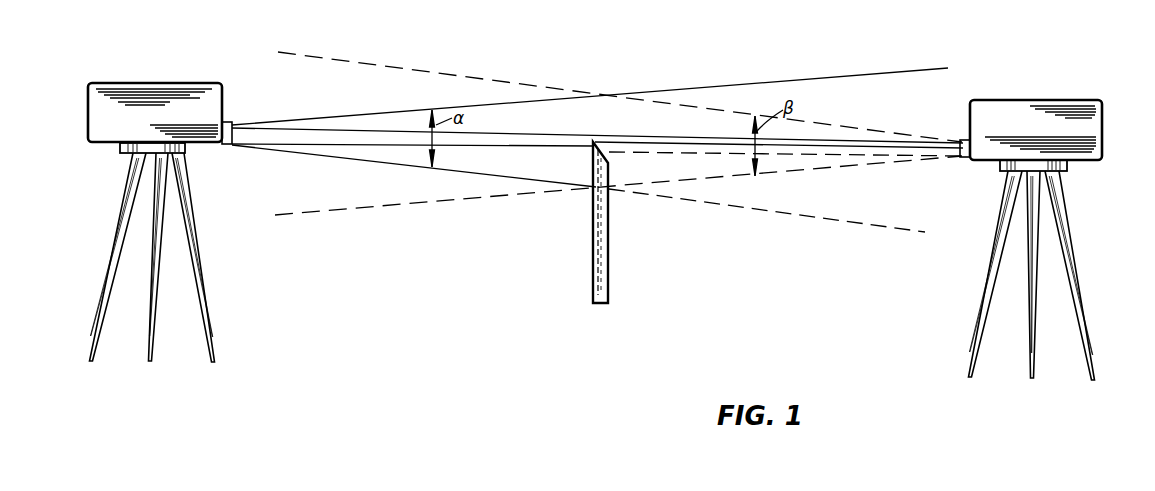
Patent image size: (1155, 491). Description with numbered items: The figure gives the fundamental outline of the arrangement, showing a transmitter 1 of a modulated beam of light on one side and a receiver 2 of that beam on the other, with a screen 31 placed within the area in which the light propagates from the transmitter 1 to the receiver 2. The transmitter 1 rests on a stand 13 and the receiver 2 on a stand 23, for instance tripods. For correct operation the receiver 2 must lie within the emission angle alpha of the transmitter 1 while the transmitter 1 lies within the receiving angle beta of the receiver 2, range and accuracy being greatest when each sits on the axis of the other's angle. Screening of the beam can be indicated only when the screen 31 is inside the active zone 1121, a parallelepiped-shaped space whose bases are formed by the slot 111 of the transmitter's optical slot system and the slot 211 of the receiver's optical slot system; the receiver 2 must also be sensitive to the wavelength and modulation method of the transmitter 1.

The transmitter 1 is at (117, 95).
The slot 111 is at (231, 122).
The stand 13 is at (190, 266).
The receiver 2 is at (1018, 112).
The slot 211 is at (959, 140).
The stand 23 is at (1065, 240).
The active zone 1121 is at (532, 137).
The screen 31 is at (592, 268).